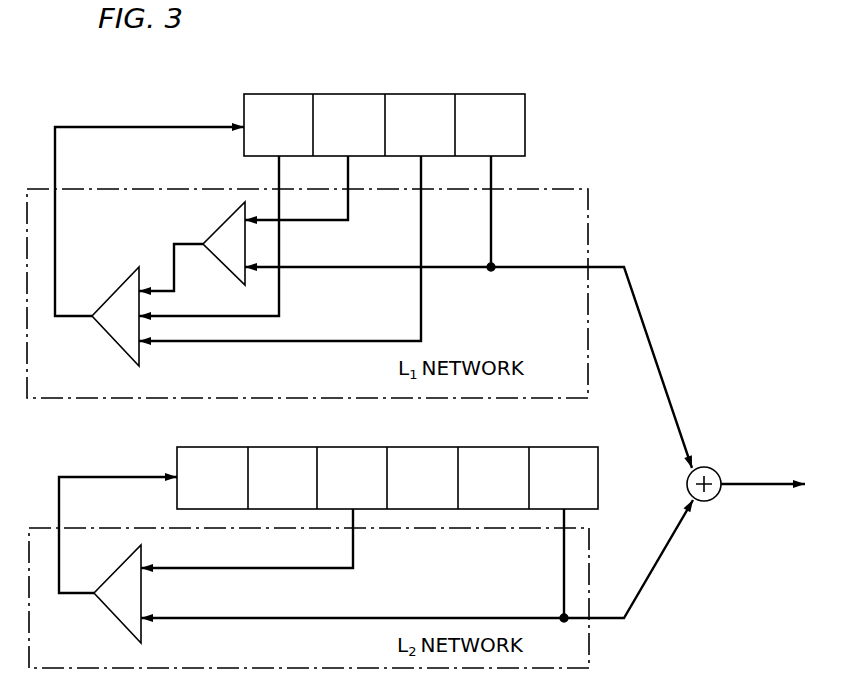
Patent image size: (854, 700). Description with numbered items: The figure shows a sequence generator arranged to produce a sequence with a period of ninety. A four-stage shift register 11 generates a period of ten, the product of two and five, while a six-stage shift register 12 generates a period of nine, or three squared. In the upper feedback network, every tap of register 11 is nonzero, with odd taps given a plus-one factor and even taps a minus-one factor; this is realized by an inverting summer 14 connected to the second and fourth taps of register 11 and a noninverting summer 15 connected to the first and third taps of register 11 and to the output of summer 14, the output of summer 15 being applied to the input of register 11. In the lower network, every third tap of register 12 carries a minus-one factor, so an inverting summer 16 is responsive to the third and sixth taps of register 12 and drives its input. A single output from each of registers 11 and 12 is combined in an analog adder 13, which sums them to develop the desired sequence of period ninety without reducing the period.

The shift register 11 is at (355, 93).
The shift register 12 is at (583, 446).
The analog adder 13 is at (711, 466).
The inverting summer 14 is at (232, 219).
The noninverting summer 15 is at (122, 283).
The inverting summer 16 is at (125, 558).